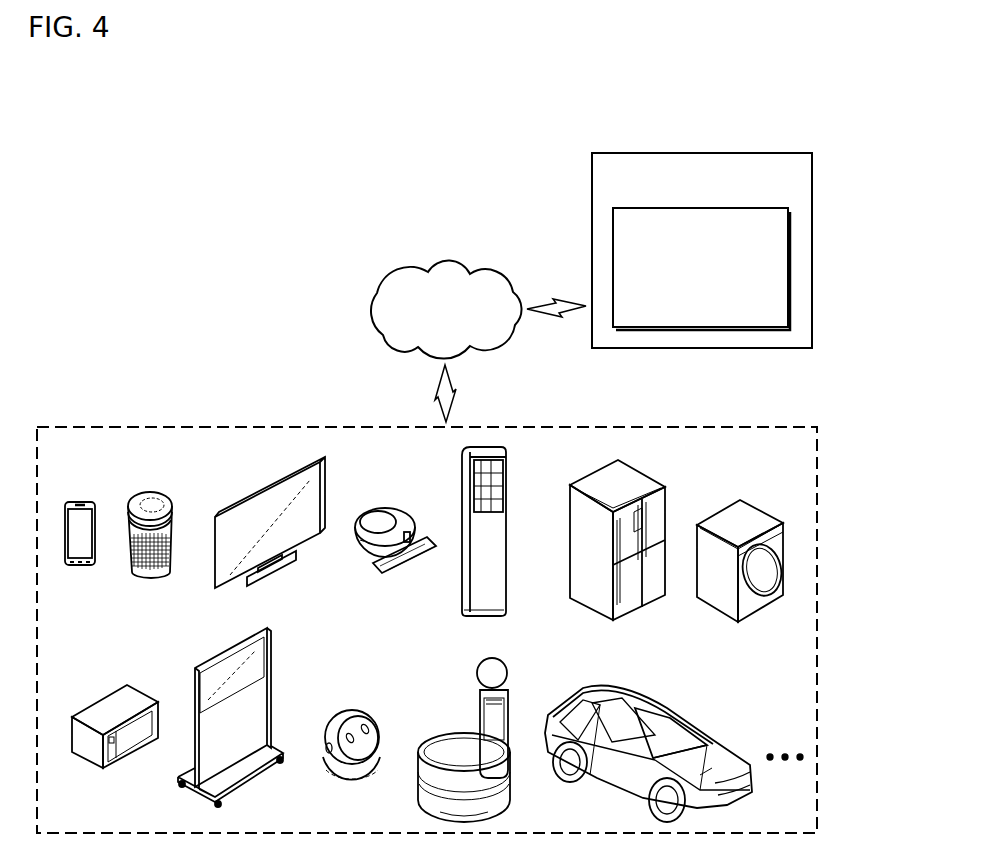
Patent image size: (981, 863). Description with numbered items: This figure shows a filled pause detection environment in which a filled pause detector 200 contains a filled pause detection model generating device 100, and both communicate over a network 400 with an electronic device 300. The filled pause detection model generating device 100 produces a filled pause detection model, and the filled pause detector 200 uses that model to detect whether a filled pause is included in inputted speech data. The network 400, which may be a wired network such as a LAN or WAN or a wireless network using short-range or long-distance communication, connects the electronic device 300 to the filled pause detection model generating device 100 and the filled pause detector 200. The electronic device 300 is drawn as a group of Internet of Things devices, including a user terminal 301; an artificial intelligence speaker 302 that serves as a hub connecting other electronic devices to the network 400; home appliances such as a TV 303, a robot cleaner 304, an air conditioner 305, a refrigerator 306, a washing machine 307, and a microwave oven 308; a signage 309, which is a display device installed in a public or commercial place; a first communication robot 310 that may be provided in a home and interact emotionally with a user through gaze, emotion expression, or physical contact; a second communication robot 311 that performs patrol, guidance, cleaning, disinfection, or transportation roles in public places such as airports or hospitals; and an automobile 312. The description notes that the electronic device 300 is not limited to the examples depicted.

The filled pause detection model generating device 100 is at (756, 208).
The filled pause detector 200 is at (770, 153).
The electronic device 300 is at (763, 426).
The network 400 is at (402, 266).
The user terminal 301 is at (80, 500).
The artificial intelligence speaker 302 is at (149, 493).
The TV 303 is at (250, 498).
The robot cleaner 304 is at (389, 502).
The air conditioner 305 is at (503, 463).
The refrigerator 306 is at (640, 477).
The washing machine 307 is at (758, 512).
The microwave oven 308 is at (112, 687).
The signage 309 is at (272, 684).
The first communication robot 310 is at (368, 718).
The second communication robot 311 is at (512, 674).
The automobile 312 is at (688, 716).